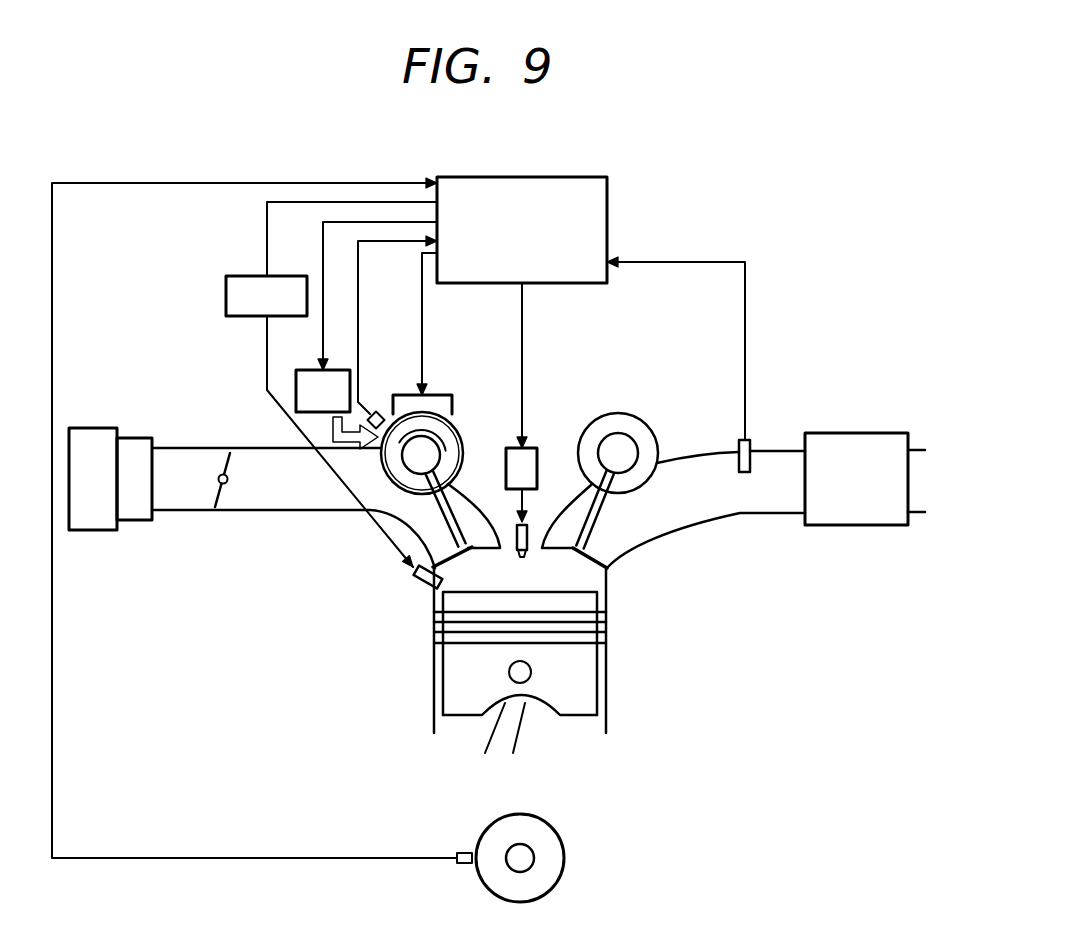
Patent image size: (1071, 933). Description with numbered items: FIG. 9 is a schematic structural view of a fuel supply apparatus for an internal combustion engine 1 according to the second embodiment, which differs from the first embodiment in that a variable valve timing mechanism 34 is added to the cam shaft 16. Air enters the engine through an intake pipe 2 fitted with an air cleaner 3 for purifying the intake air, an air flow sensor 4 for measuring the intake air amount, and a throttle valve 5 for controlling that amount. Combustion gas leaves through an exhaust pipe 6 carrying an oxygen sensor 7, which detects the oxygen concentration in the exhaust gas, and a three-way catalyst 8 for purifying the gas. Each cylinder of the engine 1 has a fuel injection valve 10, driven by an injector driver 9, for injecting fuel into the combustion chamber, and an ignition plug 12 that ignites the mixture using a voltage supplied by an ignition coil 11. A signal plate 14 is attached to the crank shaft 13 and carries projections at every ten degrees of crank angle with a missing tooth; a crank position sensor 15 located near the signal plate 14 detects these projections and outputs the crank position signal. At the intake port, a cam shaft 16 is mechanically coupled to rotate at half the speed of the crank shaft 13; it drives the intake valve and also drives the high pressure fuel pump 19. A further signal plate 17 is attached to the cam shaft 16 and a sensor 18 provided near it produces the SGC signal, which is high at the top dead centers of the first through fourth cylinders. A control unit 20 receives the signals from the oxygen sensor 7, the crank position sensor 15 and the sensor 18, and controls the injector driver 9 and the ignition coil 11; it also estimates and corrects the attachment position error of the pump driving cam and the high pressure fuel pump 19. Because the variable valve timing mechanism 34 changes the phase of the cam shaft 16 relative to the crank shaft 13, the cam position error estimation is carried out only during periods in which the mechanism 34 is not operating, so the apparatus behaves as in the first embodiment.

The internal combustion engine 1 is at (606, 665).
The intake pipe 2 is at (273, 512).
The air cleaner 3 is at (93, 428).
The air flow sensor 4 is at (137, 438).
The throttle valve 5 is at (216, 497).
The exhaust pipe 6 is at (720, 515).
The oxygen sensor 7 is at (752, 440).
The three-way catalyst 8 is at (865, 525).
The injector driver 9 is at (230, 276).
The fuel injection valve 10 is at (420, 590).
The ignition coil 11 is at (535, 448).
The ignition plug 12 is at (530, 525).
The crank shaft 13 is at (534, 858).
The signal plate 14 is at (547, 823).
The crank position sensor 15 is at (455, 850).
The cam shaft 16 is at (443, 445).
The signal plate 17 is at (463, 420).
The sensor 18 is at (373, 411).
The high pressure fuel pump 19 is at (435, 393).
The control unit (ECU) 20 is at (607, 193).
The variable valve timing mechanism 34 is at (296, 375).